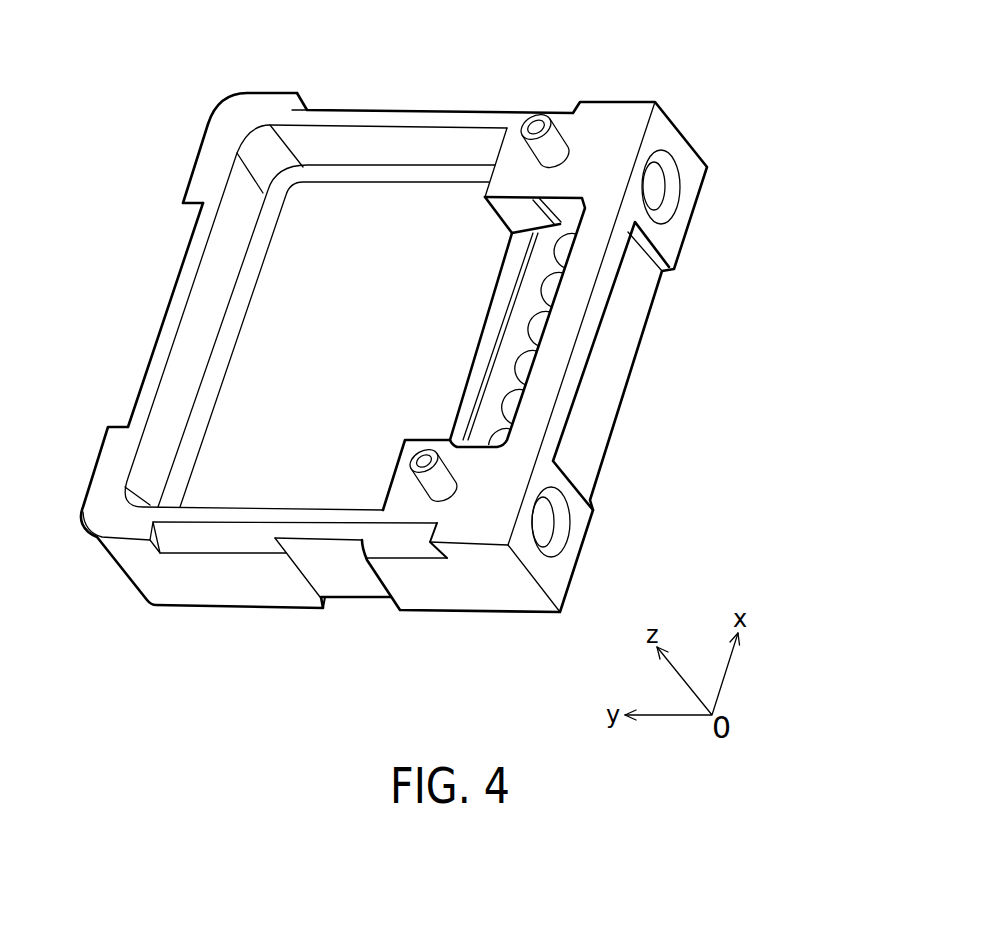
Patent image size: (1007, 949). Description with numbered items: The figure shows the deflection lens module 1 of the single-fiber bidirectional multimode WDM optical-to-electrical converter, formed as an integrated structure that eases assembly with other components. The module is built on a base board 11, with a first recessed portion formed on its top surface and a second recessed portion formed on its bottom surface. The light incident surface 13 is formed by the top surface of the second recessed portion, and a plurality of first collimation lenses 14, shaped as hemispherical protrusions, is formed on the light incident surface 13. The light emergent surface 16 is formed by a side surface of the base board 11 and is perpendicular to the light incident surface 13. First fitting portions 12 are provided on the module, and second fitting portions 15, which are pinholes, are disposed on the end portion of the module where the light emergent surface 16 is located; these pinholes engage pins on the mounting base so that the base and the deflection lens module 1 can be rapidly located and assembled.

The deflection lens module 1 is at (679, 88).
The base board 11 is at (240, 112).
The first fitting portions 12 is at (553, 145).
The light incident surface 13 is at (520, 250).
The first collimation lenses 14 is at (502, 407).
The second fitting portions 15 is at (663, 192).
The light emergent surface 16 is at (607, 382).